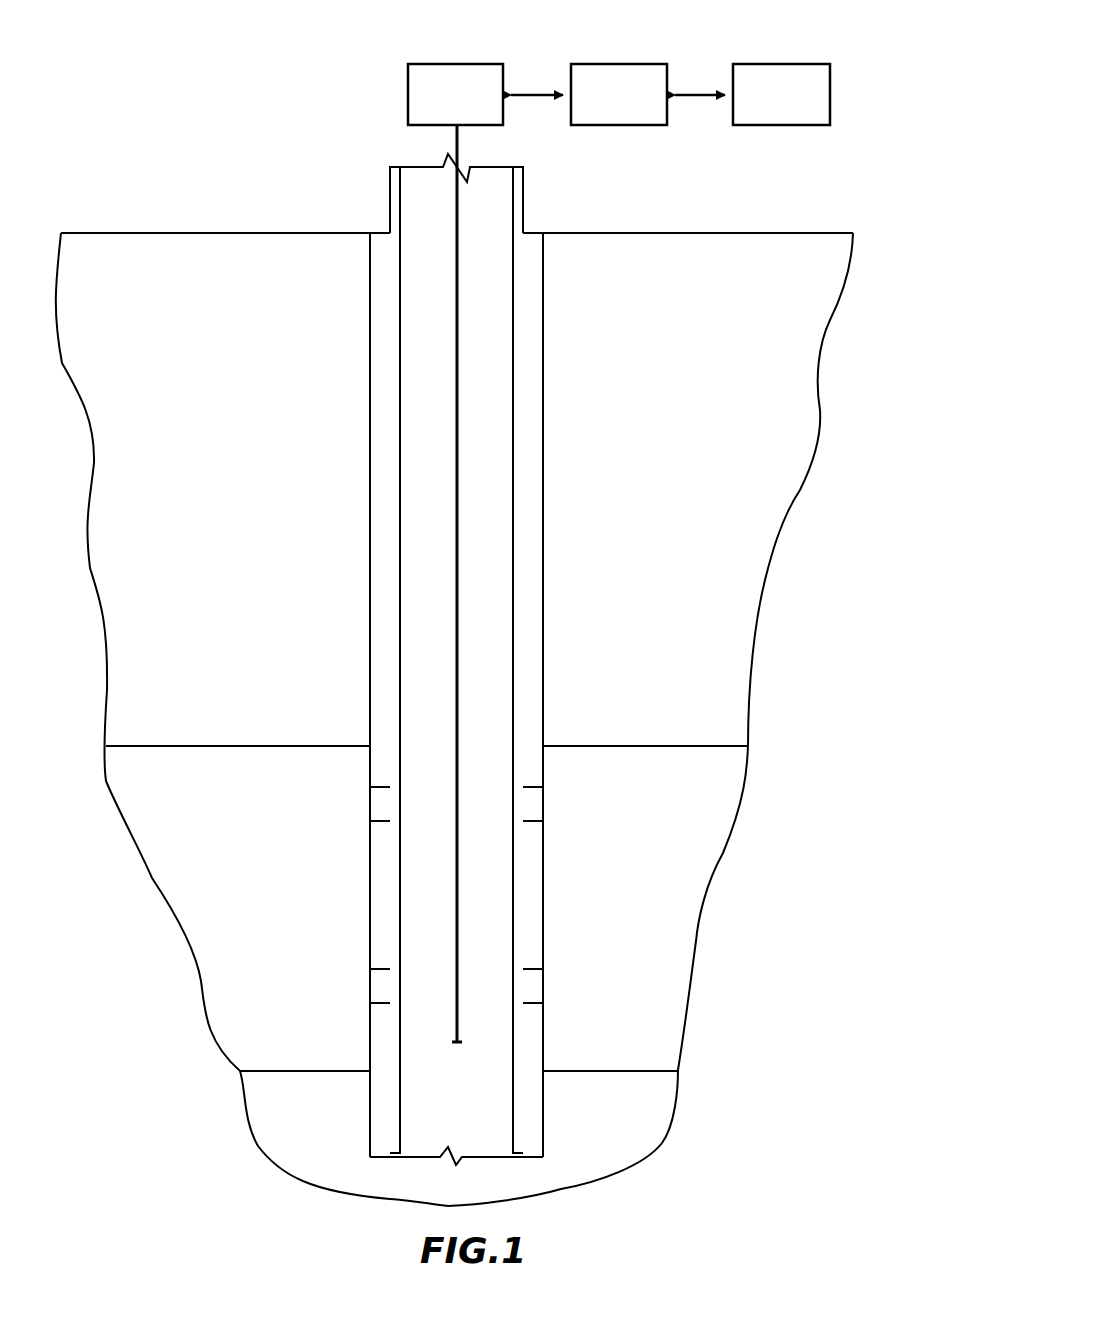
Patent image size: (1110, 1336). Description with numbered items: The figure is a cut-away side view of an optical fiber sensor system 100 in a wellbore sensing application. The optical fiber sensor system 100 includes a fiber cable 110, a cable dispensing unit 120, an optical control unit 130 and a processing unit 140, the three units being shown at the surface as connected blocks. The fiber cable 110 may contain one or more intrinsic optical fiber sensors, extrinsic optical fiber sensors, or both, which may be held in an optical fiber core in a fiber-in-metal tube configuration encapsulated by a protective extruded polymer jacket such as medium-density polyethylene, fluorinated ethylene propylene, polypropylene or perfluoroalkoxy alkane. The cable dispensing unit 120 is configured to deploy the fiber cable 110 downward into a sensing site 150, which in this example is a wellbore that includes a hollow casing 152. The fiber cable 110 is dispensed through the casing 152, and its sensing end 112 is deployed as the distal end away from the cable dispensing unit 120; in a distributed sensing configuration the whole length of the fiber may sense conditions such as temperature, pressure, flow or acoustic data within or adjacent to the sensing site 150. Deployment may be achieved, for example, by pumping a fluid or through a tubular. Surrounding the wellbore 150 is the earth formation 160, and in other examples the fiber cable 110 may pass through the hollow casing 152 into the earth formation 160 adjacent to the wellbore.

The optical fiber sensor system 100 is at (711, 44).
The fiber cable 110 is at (458, 447).
The sensing end 112 is at (487, 1031).
The cable dispensing unit 120 is at (455, 94).
The optical control unit 130 is at (589, 94).
The processing unit 140 is at (752, 94).
The sensing site 150 is at (283, 144).
The hollow casing 152 is at (379, 540).
The earth formation 160 is at (751, 635).